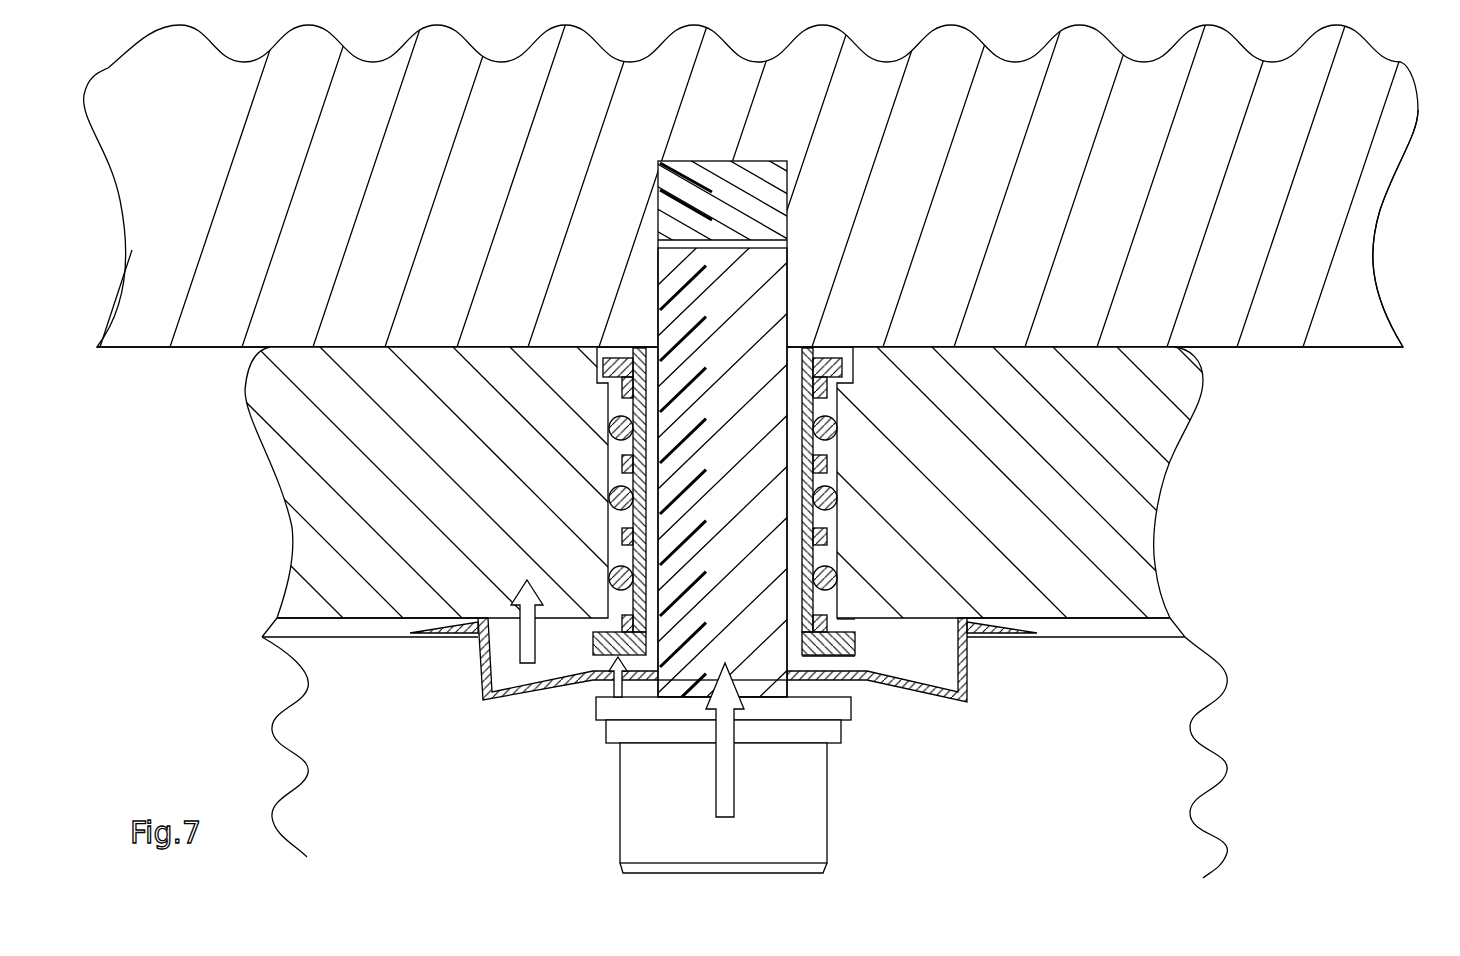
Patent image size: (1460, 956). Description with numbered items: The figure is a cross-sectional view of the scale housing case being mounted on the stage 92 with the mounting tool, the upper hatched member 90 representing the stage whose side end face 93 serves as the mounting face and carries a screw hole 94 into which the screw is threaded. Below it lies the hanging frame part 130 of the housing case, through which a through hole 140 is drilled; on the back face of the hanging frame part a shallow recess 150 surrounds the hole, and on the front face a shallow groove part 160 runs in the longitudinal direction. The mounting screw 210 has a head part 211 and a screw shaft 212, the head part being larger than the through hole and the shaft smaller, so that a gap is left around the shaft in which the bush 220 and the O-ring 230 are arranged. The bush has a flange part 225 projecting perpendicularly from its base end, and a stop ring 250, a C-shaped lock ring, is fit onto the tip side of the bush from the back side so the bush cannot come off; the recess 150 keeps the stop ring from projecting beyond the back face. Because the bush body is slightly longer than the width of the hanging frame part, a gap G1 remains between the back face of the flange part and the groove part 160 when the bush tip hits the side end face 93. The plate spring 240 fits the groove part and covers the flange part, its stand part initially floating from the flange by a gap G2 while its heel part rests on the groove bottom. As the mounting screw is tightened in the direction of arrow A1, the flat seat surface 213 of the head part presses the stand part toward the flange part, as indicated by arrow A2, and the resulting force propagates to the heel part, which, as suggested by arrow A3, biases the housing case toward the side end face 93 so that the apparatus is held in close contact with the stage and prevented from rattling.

The upper structural member 90 is at (1385, 396).
The stage 92 is at (1336, 328).
The side end face 93 is at (1265, 347).
The screw hole 94 is at (774, 160).
The hanging frame part 130 is at (313, 520).
The through hole 140 is at (830, 460).
The recess 150 is at (640, 349).
The groove part 160 is at (1122, 637).
The mounting screw 210 is at (818, 800).
The head part 211 is at (628, 798).
The screw shaft 212 is at (777, 277).
The seat surface 213 is at (637, 662).
The bush 220 is at (632, 458).
The flange part 225 is at (602, 598).
The O-ring 230 is at (608, 432).
The plate spring 240 is at (482, 700).
The stop ring 250 is at (853, 348).
The arrow A1 is at (727, 740).
The arrow A2 is at (612, 690).
The force direction arrow A3 is at (512, 600).
The gap G1 is at (856, 627).
The gap G2 is at (855, 662).